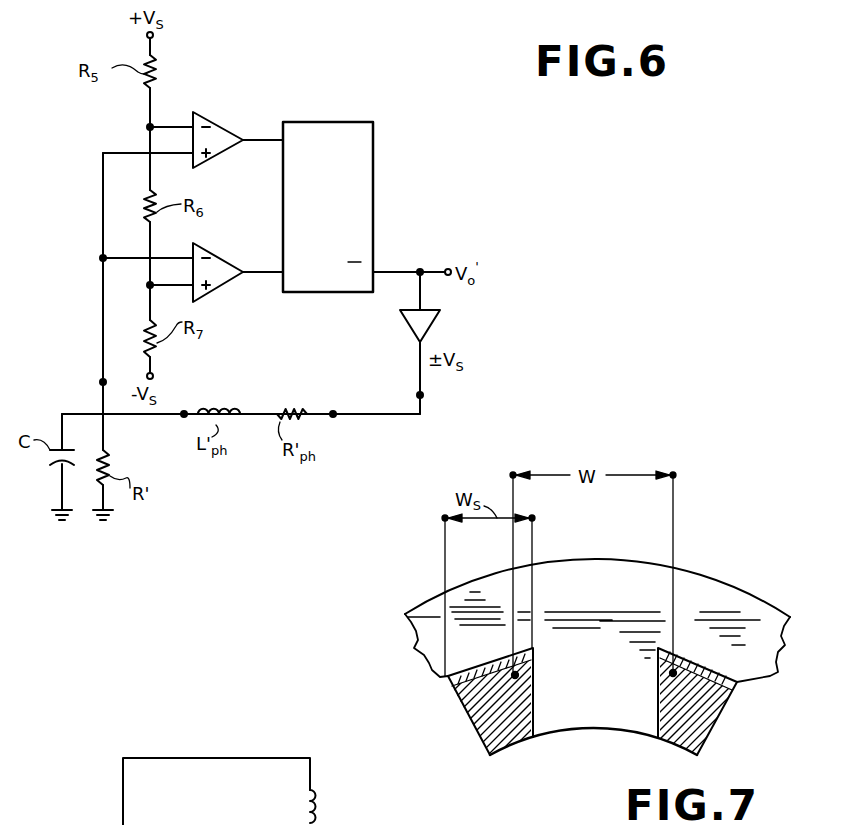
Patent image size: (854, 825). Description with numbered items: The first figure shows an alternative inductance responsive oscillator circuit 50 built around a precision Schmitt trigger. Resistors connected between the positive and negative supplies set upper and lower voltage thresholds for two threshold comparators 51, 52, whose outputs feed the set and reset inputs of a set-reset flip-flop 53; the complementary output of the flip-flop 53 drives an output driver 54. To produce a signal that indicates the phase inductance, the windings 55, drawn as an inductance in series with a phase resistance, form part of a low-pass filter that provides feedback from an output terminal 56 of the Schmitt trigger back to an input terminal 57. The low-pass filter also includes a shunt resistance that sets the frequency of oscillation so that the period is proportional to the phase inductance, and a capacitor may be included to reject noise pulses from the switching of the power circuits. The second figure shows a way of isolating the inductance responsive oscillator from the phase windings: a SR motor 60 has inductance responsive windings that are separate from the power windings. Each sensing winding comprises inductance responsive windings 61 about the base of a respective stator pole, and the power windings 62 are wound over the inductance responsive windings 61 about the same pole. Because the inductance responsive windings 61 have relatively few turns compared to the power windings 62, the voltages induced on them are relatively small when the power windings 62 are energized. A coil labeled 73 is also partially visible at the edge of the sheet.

In FIG. 6, the inductance responsive oscillator circuit 50 is at (318, 95).
In FIG. 6, the threshold comparator 51 is at (213, 122).
In FIG. 6, the threshold comparator 52 is at (218, 254).
In FIG. 6, the set-reset flip-flop 53 is at (374, 176).
In FIG. 6, the output driver 54 is at (434, 320).
In FIG. 6, the windings 55 is at (242, 373).
In FIG. 6, the output terminal 56 is at (423, 396).
In FIG. 6, the input terminal 57 is at (100, 382).
In FIG. 7, the SR motor 60 is at (712, 567).
In FIG. 7, the inductance responsive windings 61 is at (705, 678).
In FIG. 7, the power windings 62 is at (678, 657).
In FIG. 7, the coil 73 is at (306, 806).